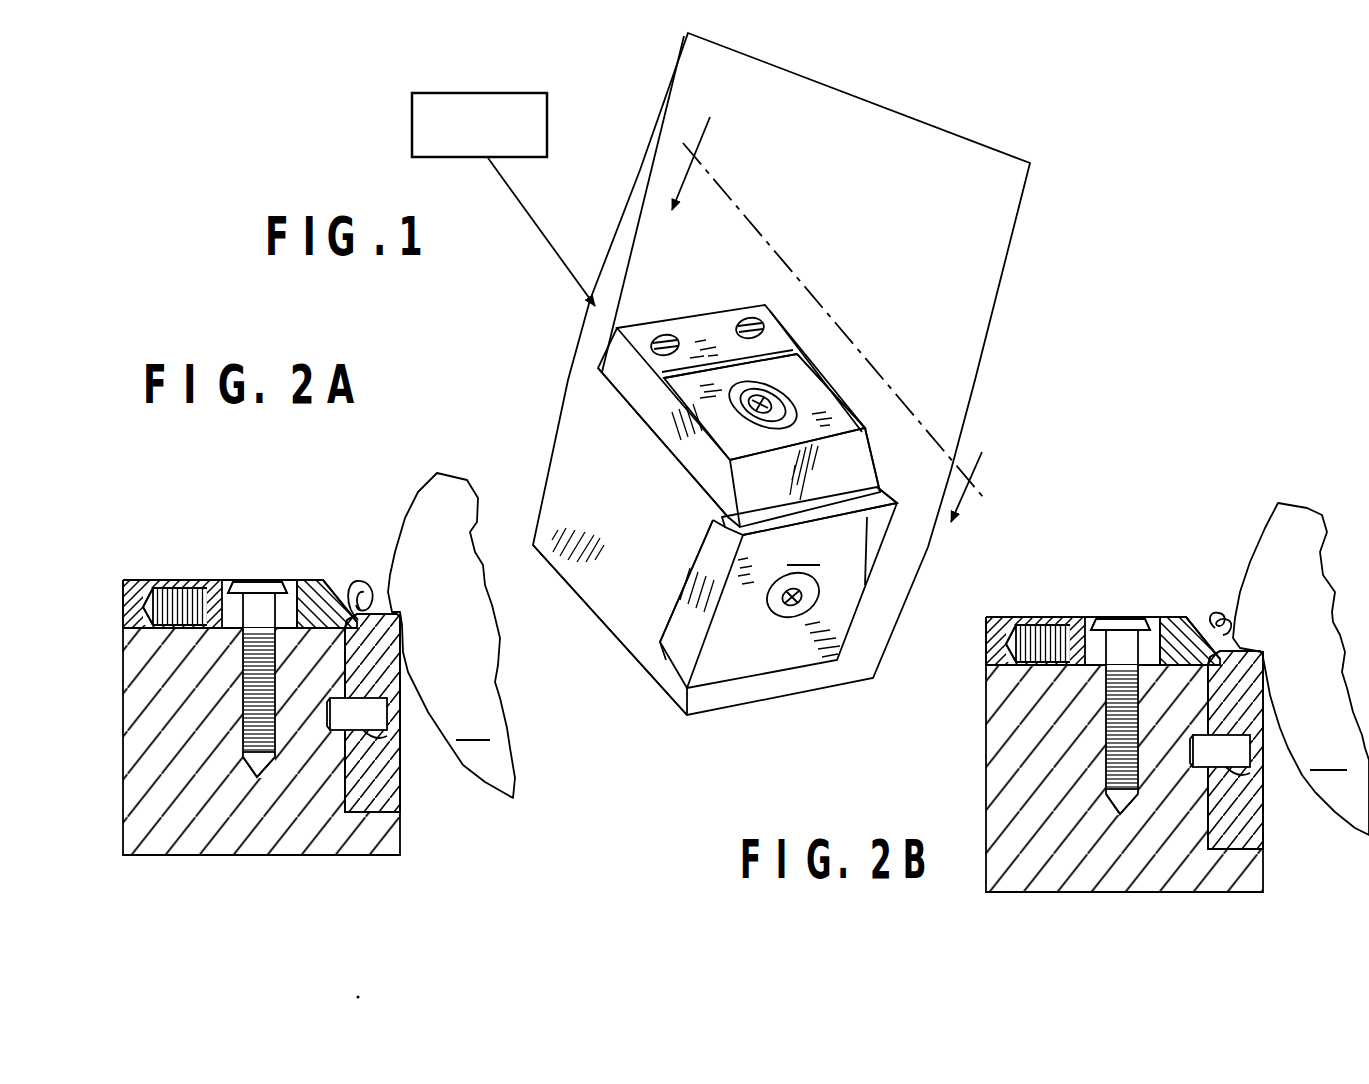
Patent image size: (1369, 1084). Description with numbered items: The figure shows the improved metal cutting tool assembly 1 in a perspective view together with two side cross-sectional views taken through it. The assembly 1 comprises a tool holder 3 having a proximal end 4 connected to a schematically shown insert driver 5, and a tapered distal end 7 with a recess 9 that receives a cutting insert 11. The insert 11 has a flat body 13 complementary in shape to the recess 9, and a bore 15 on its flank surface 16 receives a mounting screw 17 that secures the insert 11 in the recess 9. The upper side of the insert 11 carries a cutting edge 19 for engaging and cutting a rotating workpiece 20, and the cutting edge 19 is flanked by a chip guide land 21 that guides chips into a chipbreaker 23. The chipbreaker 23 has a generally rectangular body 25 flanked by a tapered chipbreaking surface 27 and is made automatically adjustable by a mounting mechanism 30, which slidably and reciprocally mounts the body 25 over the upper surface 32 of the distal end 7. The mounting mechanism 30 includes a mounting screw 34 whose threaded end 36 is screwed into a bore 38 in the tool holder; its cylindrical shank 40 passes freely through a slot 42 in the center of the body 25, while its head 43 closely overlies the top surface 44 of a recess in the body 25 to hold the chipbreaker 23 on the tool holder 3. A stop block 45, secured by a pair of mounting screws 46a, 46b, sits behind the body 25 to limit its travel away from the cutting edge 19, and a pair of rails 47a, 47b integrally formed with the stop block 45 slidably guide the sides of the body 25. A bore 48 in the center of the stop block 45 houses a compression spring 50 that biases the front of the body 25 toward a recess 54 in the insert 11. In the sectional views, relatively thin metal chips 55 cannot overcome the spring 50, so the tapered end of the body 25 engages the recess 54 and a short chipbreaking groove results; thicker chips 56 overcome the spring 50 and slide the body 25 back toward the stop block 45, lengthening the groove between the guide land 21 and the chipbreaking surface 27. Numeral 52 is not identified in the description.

In FIG. 1, the metal cutting tool assembly 1 is at (1052, 184).
In FIG. 1, the tool holder 3 is at (846, 231).
In FIG. 2A, the tool holder 3 is at (190, 803).
In FIG. 2B, the tool holder 3 is at (1124, 754).
In FIG. 1, the proximal end 4 is at (642, 177).
In FIG. 1, the insert driver 5 is at (412, 120).
In FIG. 1, the distal end 7 is at (592, 577).
In FIG. 2A, the recess 9 is at (400, 810).
In FIG. 2B, the recess 9 is at (1255, 877).
In FIG. 1, the cutting insert 11 is at (778, 595).
In FIG. 2A, the cutting insert 11 is at (413, 767).
In FIG. 2B, the cutting insert 11 is at (1280, 771).
In FIG. 1, the flat body 13 is at (670, 640).
In FIG. 2A, the bore 15 is at (404, 788).
In FIG. 2B, the bore 15 is at (1310, 829).
In FIG. 1, the flank surface 16 is at (707, 655).
In FIG. 1, the mounting screw 17 is at (785, 616).
In FIG. 1, the cutting edge 19 is at (864, 585).
In FIG. 2A, the cutting edge 19 is at (402, 622).
In FIG. 2B, the cutting edge 19 is at (1264, 659).
In FIG. 2A, the workpiece 20 is at (451, 635).
In FIG. 2B, the workpiece 20 is at (1301, 669).
In FIG. 1, the chip guide land 21 is at (892, 510).
In FIG. 1, the chipbreaker 23 is at (802, 389).
In FIG. 1, the chipbreaker body 25 is at (835, 413).
In FIG. 2A, the chipbreaker body 25 is at (293, 603).
In FIG. 2B, the chipbreaker body 25 is at (1197, 572).
In FIG. 1, the chipbreaking surface 27 is at (857, 458).
In FIG. 2A, the chipbreaking surface 27 is at (330, 580).
In FIG. 2B, the chipbreaking surface 27 is at (1210, 591).
In FIG. 2A, the mounting mechanism 30 is at (192, 540).
In FIG. 2B, the mounting mechanism 30 is at (1073, 561).
In FIG. 2A, the upper surface 32 is at (172, 687).
In FIG. 2B, the upper surface 32 is at (1035, 673).
In FIG. 2A, the mounting screw 34 is at (240, 575).
In FIG. 2A, the threaded end 36 is at (240, 717).
In FIG. 2B, the threaded end 36 is at (1029, 732).
In FIG. 2A, the bore 38 is at (247, 768).
In FIG. 2B, the bore 38 is at (1123, 830).
In FIG. 2A, the cylindrical shank 40 is at (402, 663).
In FIG. 2B, the cylindrical shank 40 is at (1258, 739).
In FIG. 2A, the slot 42 is at (307, 580).
In FIG. 2B, the slot 42 is at (1170, 584).
In FIG. 1, the head 43 is at (758, 407).
In FIG. 2B, the head 43 is at (1111, 555).
In FIG. 1, the top surface 44 is at (632, 379).
In FIG. 2A, the top surface 44 is at (225, 577).
In FIG. 2B, the top surface 44 is at (1086, 596).
In FIG. 2A, the stop block 45 is at (122, 580).
In FIG. 2B, the stop block 45 is at (953, 626).
In FIG. 1, the mounting screw 46a is at (665, 334).
In FIG. 1, the mounting screw 46b is at (750, 317).
In FIG. 1, the rail 47a is at (653, 410).
In FIG. 1, the rail 47b is at (835, 390).
In FIG. 2A, the bore 48 is at (143, 607).
In FIG. 2B, the bore 48 is at (965, 651).
In FIG. 2A, the compression spring 50 is at (172, 586).
In FIG. 2B, the compression spring 50 is at (1029, 613).
In FIG. 1, the clamping lip 52 is at (737, 495).
In FIG. 2A, the recess 54 is at (400, 638).
In FIG. 2B, the recess 54 is at (1278, 677).
In FIG. 2A, the thin metal chips 55 is at (367, 607).
In FIG. 2B, the thicker chips 56 is at (1257, 585).